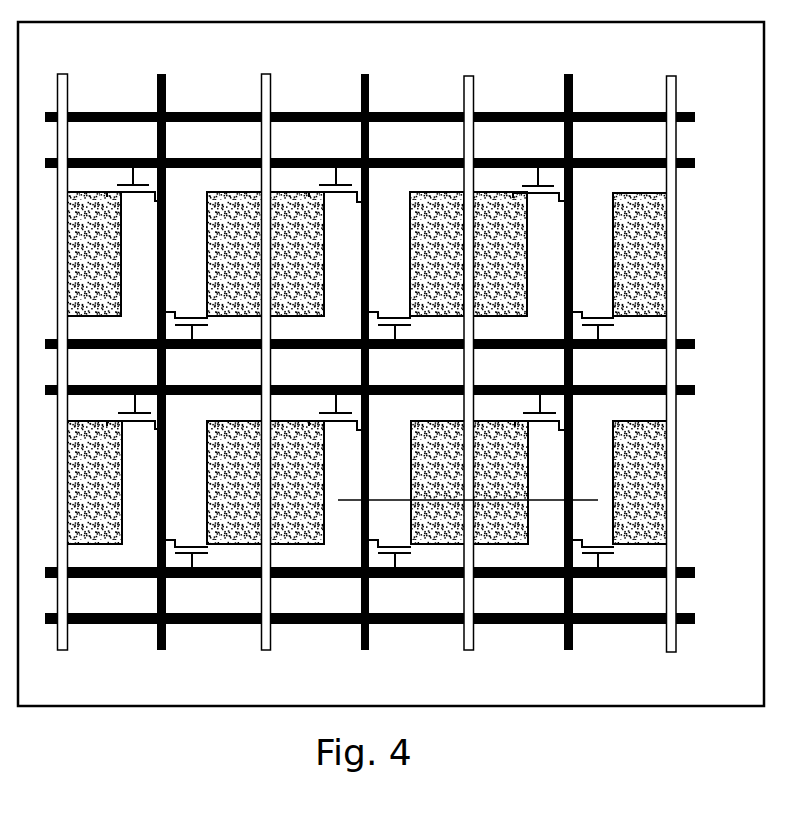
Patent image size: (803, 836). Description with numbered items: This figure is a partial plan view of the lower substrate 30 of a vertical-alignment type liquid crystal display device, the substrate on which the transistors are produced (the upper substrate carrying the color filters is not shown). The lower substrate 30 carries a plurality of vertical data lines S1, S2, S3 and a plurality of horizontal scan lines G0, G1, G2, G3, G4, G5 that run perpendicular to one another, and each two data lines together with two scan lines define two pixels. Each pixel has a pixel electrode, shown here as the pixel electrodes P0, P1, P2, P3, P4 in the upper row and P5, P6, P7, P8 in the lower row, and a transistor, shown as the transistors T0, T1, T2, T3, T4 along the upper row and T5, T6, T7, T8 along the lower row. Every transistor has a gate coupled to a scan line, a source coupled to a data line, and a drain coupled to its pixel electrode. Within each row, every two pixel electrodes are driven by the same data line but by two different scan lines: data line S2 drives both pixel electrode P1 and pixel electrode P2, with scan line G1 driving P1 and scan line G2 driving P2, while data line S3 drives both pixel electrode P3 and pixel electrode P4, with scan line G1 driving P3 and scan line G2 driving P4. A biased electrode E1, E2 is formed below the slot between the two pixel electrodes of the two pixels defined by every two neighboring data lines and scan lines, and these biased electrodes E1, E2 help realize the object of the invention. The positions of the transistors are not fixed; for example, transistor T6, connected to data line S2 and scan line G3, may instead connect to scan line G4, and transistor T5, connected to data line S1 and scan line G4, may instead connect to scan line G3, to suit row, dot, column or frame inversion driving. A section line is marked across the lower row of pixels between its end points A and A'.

The lower substrate 30 is at (758, 689).
The scan line G0 is at (391, 118).
The scan line G1 is at (391, 165).
The scan line G2 is at (391, 345).
The scan line G3 is at (391, 391).
The scan line G4 is at (391, 573).
The scan line G5 is at (391, 619).
The data line S1 is at (168, 346).
The data line S2 is at (368, 346).
The data line S3 is at (572, 346).
The biased electrode E1 is at (273, 346).
The biased electrode E2 is at (473, 346).
The pixel electrode P0 is at (220, 249).
The pixel electrode P1 is at (281, 249).
The pixel electrode P2 is at (422, 249).
The pixel electrode P3 is at (485, 249).
The pixel electrode P4 is at (627, 249).
The pixel electrode P5 is at (220, 478).
The pixel electrode P6 is at (281, 478).
The pixel electrode P7 is at (423, 478).
The pixel electrode P8 is at (486, 478).
The transistor T0 is at (187, 308).
The transistor T1 is at (336, 201).
The transistor T2 is at (390, 308).
The transistor T3 is at (539, 202).
The transistor T4 is at (594, 308).
The transistor T5 is at (187, 537).
The transistor T6 is at (335, 429).
The transistor T7 is at (391, 537).
The transistor T8 is at (540, 429).
The section line end A is at (465, 498).
The section line end A' is at (603, 498).